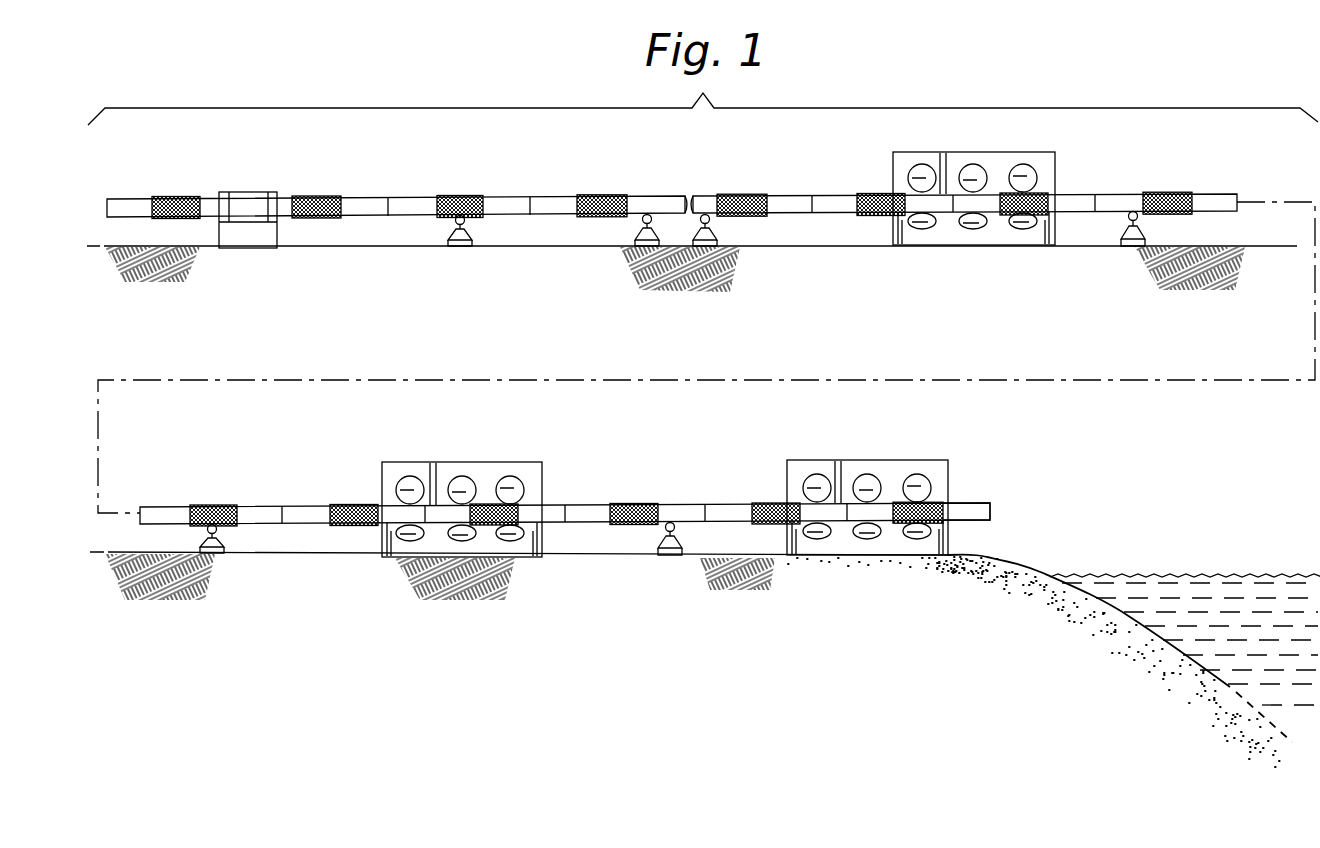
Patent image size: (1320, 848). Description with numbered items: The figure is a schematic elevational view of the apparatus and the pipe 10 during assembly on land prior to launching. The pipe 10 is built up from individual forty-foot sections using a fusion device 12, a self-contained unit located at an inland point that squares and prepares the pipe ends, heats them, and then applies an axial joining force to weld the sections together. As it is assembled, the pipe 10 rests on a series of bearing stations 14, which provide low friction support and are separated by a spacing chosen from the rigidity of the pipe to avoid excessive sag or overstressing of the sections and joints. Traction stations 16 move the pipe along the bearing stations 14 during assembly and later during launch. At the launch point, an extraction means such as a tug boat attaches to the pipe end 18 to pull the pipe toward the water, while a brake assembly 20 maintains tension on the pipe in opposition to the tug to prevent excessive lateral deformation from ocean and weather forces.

The pipe 10 is at (135, 199).
The fusion device 12 is at (247, 192).
The bearing station 14 is at (458, 247).
The traction station 16 is at (1042, 152).
The pipe end 18 is at (975, 503).
The brake assembly 20 is at (928, 460).